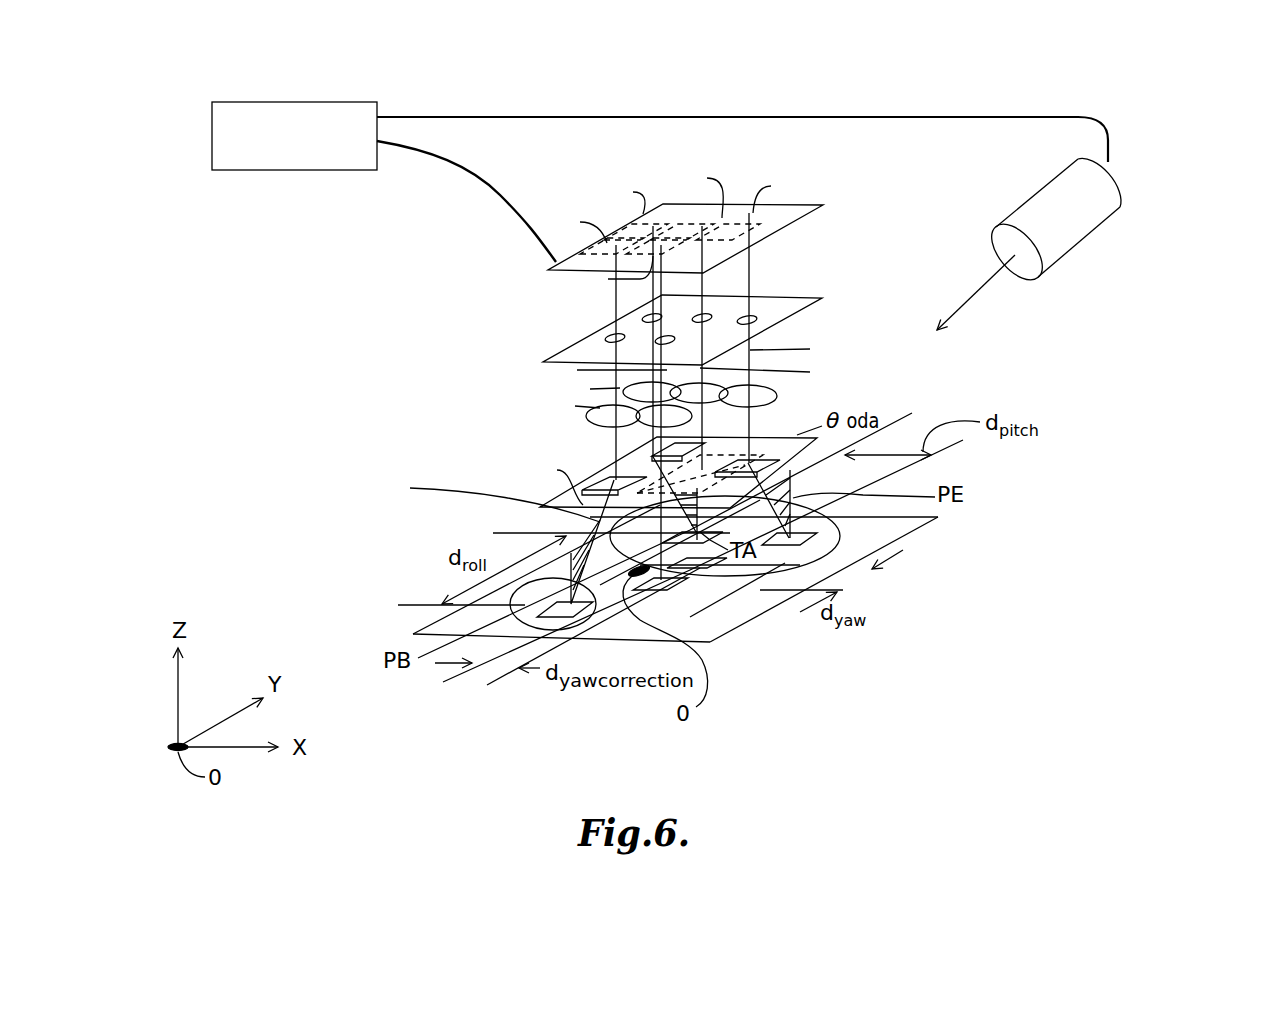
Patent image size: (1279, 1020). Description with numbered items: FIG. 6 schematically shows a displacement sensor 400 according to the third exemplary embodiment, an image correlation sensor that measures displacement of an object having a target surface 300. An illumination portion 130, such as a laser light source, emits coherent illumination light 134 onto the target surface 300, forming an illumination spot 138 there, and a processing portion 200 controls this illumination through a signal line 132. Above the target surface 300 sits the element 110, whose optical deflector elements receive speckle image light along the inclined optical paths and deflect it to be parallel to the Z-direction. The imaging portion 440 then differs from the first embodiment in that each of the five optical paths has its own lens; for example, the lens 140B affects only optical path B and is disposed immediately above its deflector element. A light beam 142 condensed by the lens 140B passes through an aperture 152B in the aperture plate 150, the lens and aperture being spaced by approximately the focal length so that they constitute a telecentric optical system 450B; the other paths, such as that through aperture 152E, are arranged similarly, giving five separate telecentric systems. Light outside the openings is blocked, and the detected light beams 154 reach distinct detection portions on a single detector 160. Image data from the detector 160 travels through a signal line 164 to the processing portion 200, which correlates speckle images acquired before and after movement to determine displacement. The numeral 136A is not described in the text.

The processing portion 200 is at (212, 138).
The signal line 132 is at (580, 120).
The signal line 164 is at (473, 175).
The displacement sensor 400 is at (1168, 160).
The illumination portion 130 is at (1057, 284).
The illumination light 134 is at (1001, 309).
The detector 160 is at (805, 205).
The detected light beams 154 is at (770, 270).
The light beam 142 is at (792, 332).
The aperture 152B is at (590, 348).
The aperture 152E is at (757, 316).
The telecentric optical system 450B is at (385, 316).
The aperture plate 150 is at (587, 348).
The lens 140B is at (588, 422).
The imaging portion 440 is at (348, 393).
The element 110 is at (543, 503).
The beam A 136A is at (476, 499).
The target surface 300 is at (740, 632).
The illumination spot 138 is at (762, 595).